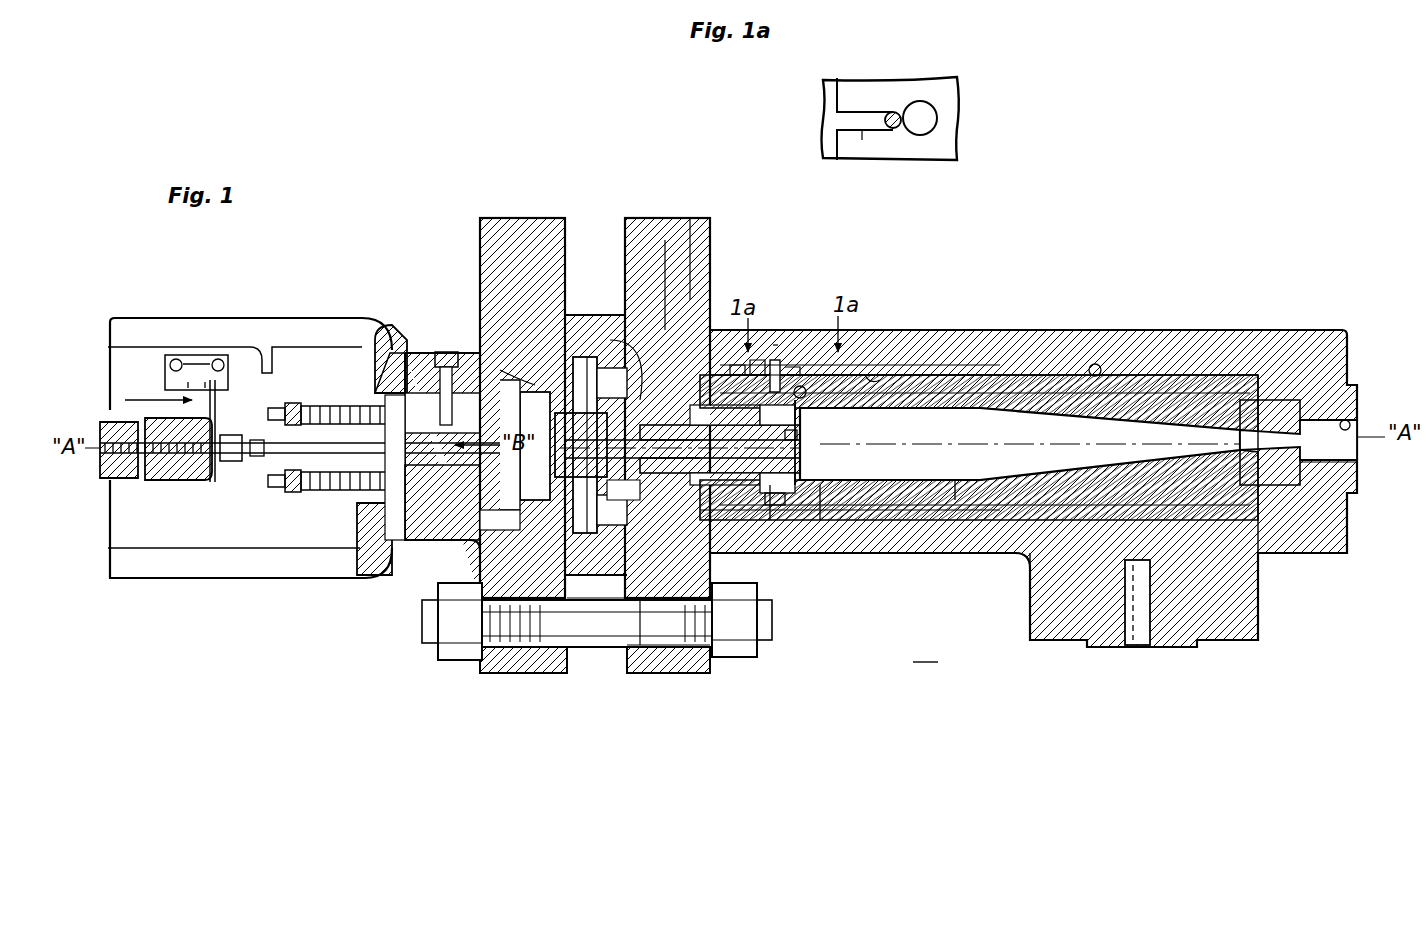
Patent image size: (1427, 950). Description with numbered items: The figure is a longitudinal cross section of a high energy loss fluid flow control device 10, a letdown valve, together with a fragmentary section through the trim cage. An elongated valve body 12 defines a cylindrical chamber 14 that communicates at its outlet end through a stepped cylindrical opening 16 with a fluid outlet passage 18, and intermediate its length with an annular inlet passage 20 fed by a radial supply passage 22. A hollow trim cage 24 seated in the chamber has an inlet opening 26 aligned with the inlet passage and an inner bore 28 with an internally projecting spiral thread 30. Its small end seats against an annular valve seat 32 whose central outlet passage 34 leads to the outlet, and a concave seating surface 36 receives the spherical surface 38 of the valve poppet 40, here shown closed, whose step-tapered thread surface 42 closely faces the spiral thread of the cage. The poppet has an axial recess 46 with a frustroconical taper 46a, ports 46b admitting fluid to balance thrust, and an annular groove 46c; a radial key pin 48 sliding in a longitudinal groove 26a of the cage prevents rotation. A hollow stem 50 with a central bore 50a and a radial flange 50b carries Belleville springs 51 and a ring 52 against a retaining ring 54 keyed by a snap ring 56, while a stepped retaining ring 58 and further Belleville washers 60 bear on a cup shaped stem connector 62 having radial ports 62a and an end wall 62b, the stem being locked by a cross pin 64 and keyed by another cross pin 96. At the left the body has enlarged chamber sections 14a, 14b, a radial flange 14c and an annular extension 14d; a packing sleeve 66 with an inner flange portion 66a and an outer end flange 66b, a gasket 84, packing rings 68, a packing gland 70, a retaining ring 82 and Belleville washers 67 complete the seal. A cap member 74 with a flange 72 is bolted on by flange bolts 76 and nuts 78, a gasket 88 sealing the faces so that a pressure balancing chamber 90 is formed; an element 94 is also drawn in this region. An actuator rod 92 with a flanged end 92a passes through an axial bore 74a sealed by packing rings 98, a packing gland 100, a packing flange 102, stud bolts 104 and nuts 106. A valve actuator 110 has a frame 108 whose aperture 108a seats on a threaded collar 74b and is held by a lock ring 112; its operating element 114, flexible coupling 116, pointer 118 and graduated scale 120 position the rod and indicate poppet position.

In FIG. 1, the fluid flow control device 10 is at (925, 653).
In FIG. 1, the valve body 12 is at (928, 557).
In FIG. 1, the cylindrical chamber 14 is at (1257, 340).
In FIG. 1, the enlarged diameter chamber section 14a is at (708, 330).
In FIG. 1, the enlarged diameter chamber section 14b is at (668, 335).
In FIG. 1, the radial flange 14c is at (640, 218).
In FIG. 1, the annular extension 14d is at (578, 316).
In FIG. 1, the stepped diameter cylindrical opening 16 is at (1357, 455).
In FIG. 1, the fluid outlet passage 18 is at (1358, 432).
In FIG. 1, the annular fluid inlet passage 20 is at (1097, 363).
In FIG. 1, the radial supply passage 22 is at (1133, 647).
In FIG. 1, the trim cage 24 is at (1054, 378).
In FIG. 1, the inlet opening 26 is at (790, 370).
In FIG. 1A, the inlet opening 26 is at (933, 118).
In FIG. 1, the longitudinal groove 26a is at (798, 365).
In FIG. 1A, the longitudinal groove 26a is at (865, 132).
In FIG. 1, the inner bore 28 is at (873, 380).
In FIG. 1, the spiral thread 30 is at (988, 392).
In FIG. 1, the annular valve seat 32 is at (1293, 380).
In FIG. 1, the central outlet passage 34 is at (1357, 385).
In FIG. 1, the valve seating surface 36 is at (1349, 356).
In FIG. 1, the spherical surface 38 is at (1283, 470).
In FIG. 1, the valve poppet 40 is at (957, 495).
In FIG. 1, the step-tapered thread surface 42 is at (1018, 525).
In FIG. 1, the axial recess 46 is at (918, 475).
In FIG. 1, the frustroconical taper 46a is at (1193, 390).
In FIG. 1, the ports 46b is at (1240, 442).
In FIG. 1, the annular groove 46c is at (770, 512).
In FIG. 1, the radial key pin 48 is at (805, 395).
In FIG. 1A, the radial key pin 48 is at (895, 110).
In FIG. 1, the hollow axial stem 50 is at (732, 363).
In FIG. 1, the central bore 50a is at (800, 468).
In FIG. 1, the radial flange 50b is at (800, 422).
In FIG. 1, the Belleville springs 51 is at (838, 540).
In FIG. 1, the ring 52 is at (825, 462).
In FIG. 1, the annular retaining ring 54 is at (785, 500).
In FIG. 1, the snap ring 56 is at (792, 440).
In FIG. 1, the stepped annular retaining ring 58 is at (755, 432).
In FIG. 1, the Belleville spring washers 60 is at (480, 556).
In FIG. 1, the stem connector 62 is at (575, 350).
In FIG. 1, the radial ports 62a is at (605, 375).
In FIG. 1, the end wall 62b is at (505, 468).
In FIG. 1, the cross pin 64 is at (630, 470).
In FIG. 1, the annular packing sleeve 66 is at (656, 600).
In FIG. 1, the radial flange portion 66a is at (760, 362).
In FIG. 1, the bolt portion 66b is at (627, 600).
In FIG. 1, the Belleville spring washers 67 is at (774, 343).
In FIG. 1, the packing rings 68 is at (672, 675).
In FIG. 1, the packing gland 70 is at (640, 335).
In FIG. 1, the flange 72 is at (506, 218).
In FIG. 1, the cap member 74 is at (478, 313).
In FIG. 1, the axial bore 74a is at (415, 470).
In FIG. 1, the threaded collar portion 74b is at (398, 355).
In FIG. 1, the flange bolts 76 is at (436, 630).
In FIG. 1, the nuts 78 is at (425, 650).
In FIG. 1, the packing gland retaining ring 82 is at (597, 588).
In FIG. 1, the annular gasket 84 is at (618, 602).
In FIG. 1, the gasket 88 is at (515, 363).
In FIG. 1, the pressure balancing chamber 90 is at (500, 508).
In FIG. 1, the actuator rod 92 is at (262, 440).
In FIG. 1, the flanged end portion 92a is at (500, 410).
In FIG. 1, the plate 94 is at (560, 393).
In FIG. 1, the cross pin 96 is at (648, 445).
In FIG. 1, the packing rings 98 is at (439, 410).
In FIG. 1, the packing gland 100 is at (333, 407).
In FIG. 1, the packing flange 102 is at (300, 492).
In FIG. 1, the threaded stud bolts 104 is at (280, 486).
In FIG. 1, the nuts 106 is at (300, 402).
In FIG. 1, the cage-like frame 108 is at (165, 582).
In FIG. 1, the aperture 108a is at (377, 528).
In FIG. 1, the valve actuator 110 is at (148, 312).
In FIG. 1, the threaded lock ring 112 is at (360, 365).
In FIG. 1, the operating element 114 is at (112, 478).
In FIG. 1, the flexible coupling 116 is at (172, 482).
In FIG. 1, the pointer 118 is at (216, 380).
In FIG. 1, the graduated scale 120 is at (200, 355).